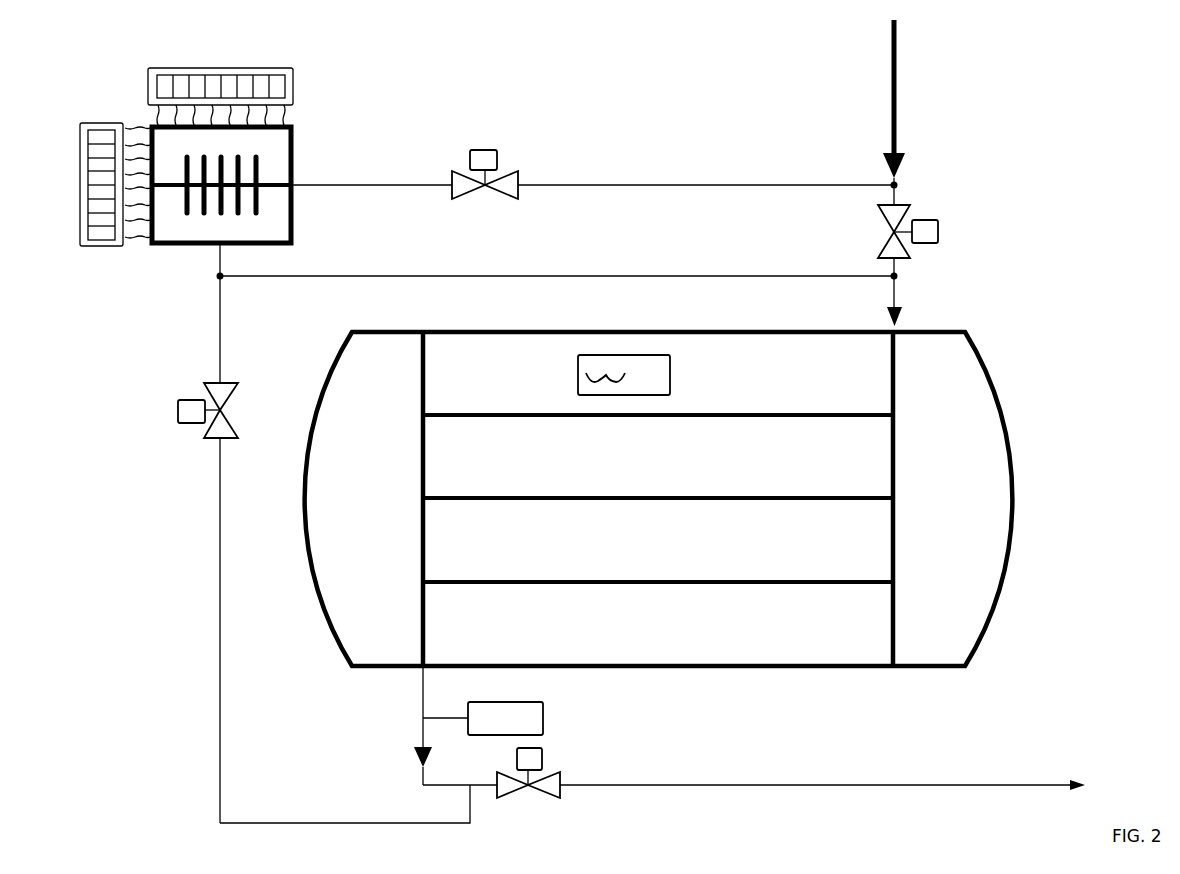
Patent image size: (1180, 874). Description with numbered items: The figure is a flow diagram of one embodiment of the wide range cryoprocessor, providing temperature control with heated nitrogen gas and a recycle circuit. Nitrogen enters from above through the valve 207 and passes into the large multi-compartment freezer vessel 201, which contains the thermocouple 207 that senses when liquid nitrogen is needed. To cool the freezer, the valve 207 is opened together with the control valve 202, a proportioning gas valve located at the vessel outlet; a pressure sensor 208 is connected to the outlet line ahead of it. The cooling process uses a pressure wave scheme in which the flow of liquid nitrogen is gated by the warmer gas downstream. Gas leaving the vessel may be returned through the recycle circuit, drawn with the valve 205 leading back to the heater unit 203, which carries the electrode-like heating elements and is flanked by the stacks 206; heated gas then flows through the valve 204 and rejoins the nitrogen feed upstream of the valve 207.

The storage tank 201 is at (659, 499).
The control valve 202 is at (528, 781).
The electrolyzer 203 is at (221, 185).
The gas feed valve 204 is at (485, 182).
The return valve 205 is at (191, 410).
The electrode stacks 206 is at (157, 143).
The valve / thermocouple 207 is at (773, 309).
The pressure sensor 208 is at (505, 718).